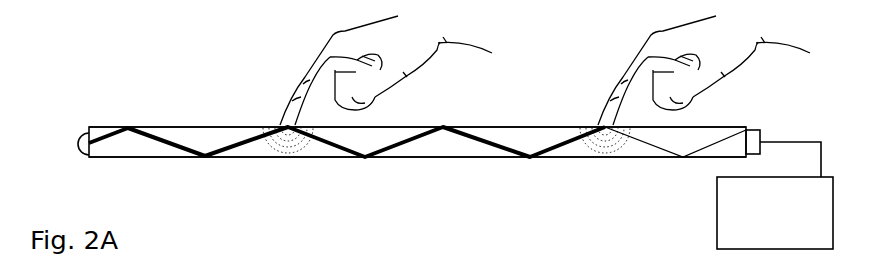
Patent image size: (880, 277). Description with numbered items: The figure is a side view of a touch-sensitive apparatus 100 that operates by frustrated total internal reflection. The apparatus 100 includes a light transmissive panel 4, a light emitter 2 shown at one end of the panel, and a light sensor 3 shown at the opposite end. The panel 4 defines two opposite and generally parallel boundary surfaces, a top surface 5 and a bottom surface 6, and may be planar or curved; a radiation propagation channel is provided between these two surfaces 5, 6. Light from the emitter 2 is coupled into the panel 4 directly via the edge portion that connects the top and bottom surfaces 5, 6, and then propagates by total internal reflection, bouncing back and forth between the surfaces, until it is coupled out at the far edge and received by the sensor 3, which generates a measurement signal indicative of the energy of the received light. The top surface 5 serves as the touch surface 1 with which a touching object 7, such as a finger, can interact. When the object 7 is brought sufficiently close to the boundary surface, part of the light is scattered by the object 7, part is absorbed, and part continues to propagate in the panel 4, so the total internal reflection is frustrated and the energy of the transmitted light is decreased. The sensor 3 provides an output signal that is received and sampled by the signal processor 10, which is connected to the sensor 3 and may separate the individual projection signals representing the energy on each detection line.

The touch-sensitive apparatus 100 is at (137, 91).
The touch surface 1 is at (493, 127).
The light emitter 2 is at (89, 130).
The light sensor 3 is at (755, 137).
The light transmissive panel 4 is at (200, 137).
The top surface 5 is at (260, 127).
The bottom surface 6 is at (250, 158).
The touching object 7 is at (318, 60).
The signal processor 10 is at (717, 221).